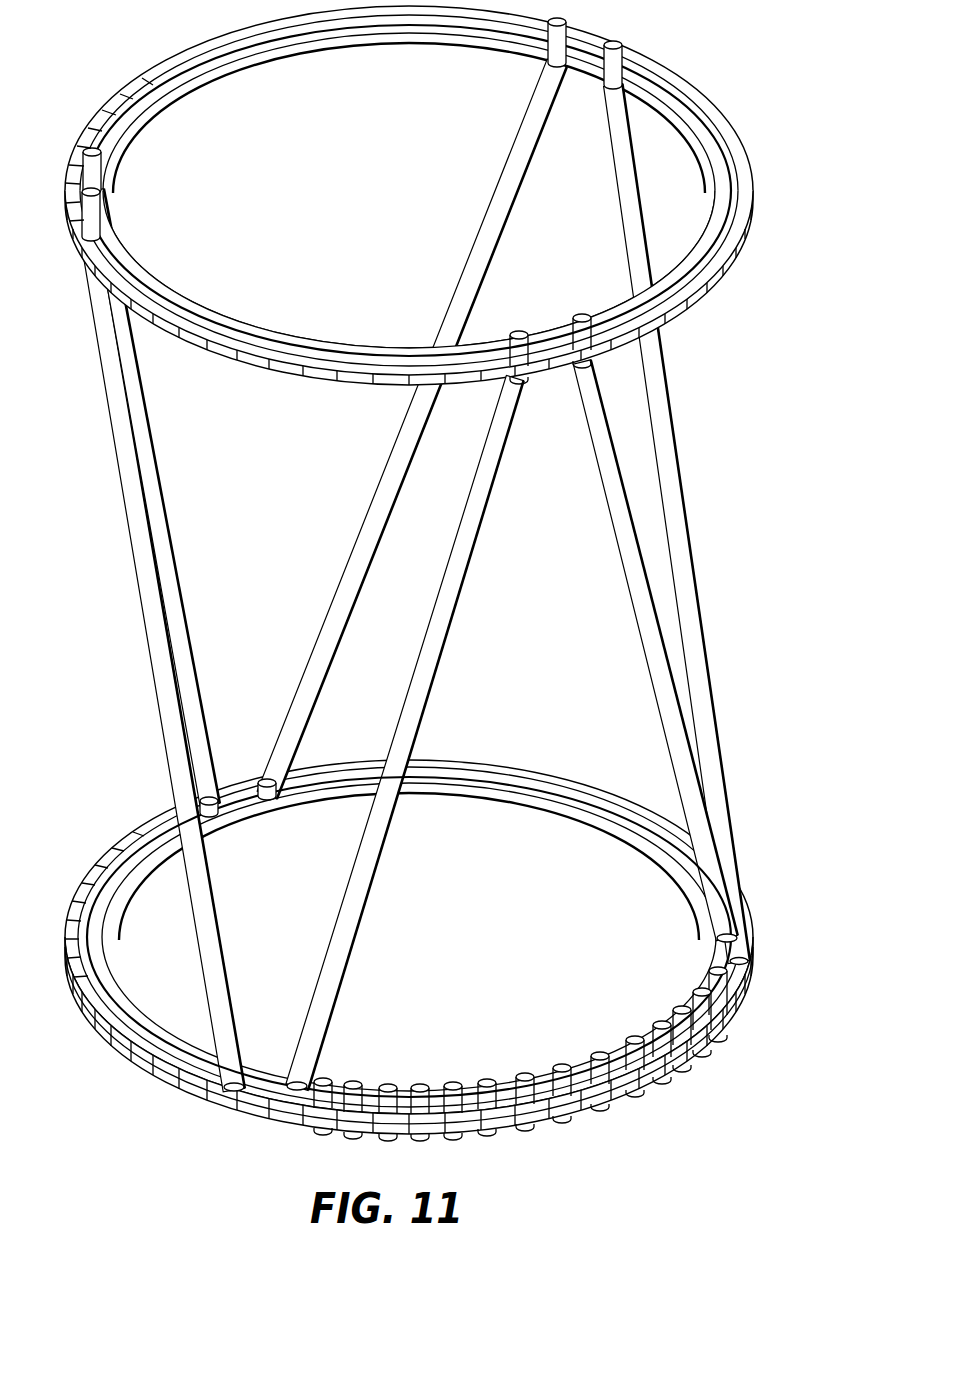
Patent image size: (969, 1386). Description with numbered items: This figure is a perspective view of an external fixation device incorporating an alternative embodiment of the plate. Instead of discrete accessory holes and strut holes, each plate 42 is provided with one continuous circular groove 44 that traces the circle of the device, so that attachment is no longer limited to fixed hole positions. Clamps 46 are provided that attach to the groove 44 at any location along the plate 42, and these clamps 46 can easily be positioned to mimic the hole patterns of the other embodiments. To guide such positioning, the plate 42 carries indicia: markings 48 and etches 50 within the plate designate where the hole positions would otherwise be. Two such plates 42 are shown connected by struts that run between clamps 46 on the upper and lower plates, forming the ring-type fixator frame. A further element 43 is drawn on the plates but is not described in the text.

The plate 42 is at (758, 206).
The post 43 is at (618, 52).
The continuous circular groove 44 is at (152, 98).
The clamps 46 is at (100, 169).
The markings 48 is at (128, 842).
The etches 50 is at (300, 377).